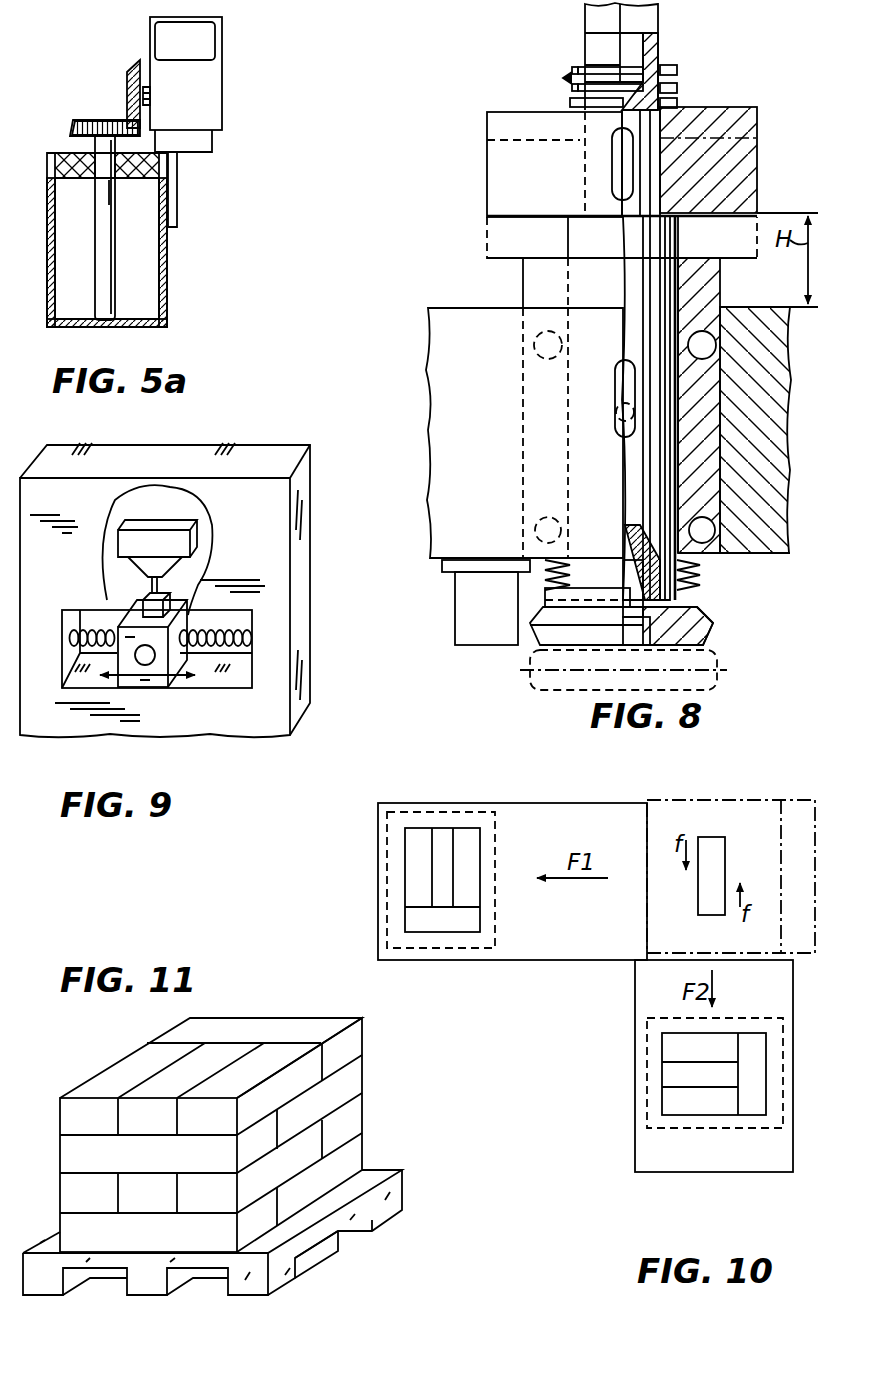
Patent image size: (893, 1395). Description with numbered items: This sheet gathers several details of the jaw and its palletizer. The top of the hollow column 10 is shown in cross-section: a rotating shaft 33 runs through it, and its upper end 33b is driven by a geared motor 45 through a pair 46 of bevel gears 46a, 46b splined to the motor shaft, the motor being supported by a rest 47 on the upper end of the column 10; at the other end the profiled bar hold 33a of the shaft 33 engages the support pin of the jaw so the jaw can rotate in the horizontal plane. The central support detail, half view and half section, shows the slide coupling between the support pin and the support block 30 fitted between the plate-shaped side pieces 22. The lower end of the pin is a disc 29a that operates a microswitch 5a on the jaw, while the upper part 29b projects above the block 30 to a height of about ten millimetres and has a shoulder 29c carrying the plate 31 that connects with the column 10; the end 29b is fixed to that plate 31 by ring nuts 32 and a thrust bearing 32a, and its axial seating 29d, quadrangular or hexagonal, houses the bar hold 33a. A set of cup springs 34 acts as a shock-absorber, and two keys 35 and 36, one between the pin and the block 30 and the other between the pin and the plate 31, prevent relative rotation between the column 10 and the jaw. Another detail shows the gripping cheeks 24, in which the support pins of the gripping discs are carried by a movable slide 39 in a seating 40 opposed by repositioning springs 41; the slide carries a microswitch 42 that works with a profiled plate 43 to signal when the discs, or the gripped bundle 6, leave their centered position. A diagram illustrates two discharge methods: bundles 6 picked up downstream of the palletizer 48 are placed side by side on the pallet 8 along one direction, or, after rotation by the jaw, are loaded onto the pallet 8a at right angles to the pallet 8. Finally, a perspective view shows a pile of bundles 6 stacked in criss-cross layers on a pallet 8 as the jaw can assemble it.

In FIG. 5a, the geared motor 45 is at (207, 103).
In FIG. 5a, the rest 47 is at (178, 177).
In FIG. 5a, the pair of bevel gears 46 is at (115, 117).
In FIG. 5a, the bevel gear 46a is at (90, 122).
In FIG. 5a, the bevel gear 46b is at (130, 83).
In FIG. 5a, the rotating shaft 33 is at (110, 245).
In FIG. 8, the rotating shaft 33 is at (648, 22).
In FIG. 8, the bar hold 33a is at (630, 50).
In FIG. 5a, the upper end of the through shaft 33b is at (117, 187).
In FIG. 5a, the column 10 is at (167, 302).
In FIG. 8, the ring nuts 32 is at (563, 79).
In FIG. 8, the thrust bearing 32a is at (678, 102).
In FIG. 8, the disc 29a is at (713, 630).
In FIG. 8, the upper part of the pin 29b is at (647, 262).
In FIG. 8, the depression shoulder 29c is at (685, 213).
In FIG. 8, the axial seating 29d is at (650, 72).
In FIG. 8, the plate 31 is at (495, 130).
In FIG. 8, the key 36 is at (612, 168).
In FIG. 8, the key 35 is at (612, 382).
In FIG. 8, the support block 30 is at (537, 293).
In FIG. 8, the side pieces 22 is at (775, 540).
In FIG. 8, the set of cup springs 34 is at (693, 570).
In FIG. 8, the microswitch 5a is at (531, 623).
In FIG. 9, the gripping cheeks 24 is at (295, 595).
In FIG. 9, the movable slide 39 is at (183, 655).
In FIG. 9, the seating 40 is at (225, 618).
In FIG. 9, the repositioning springs 41 is at (85, 630).
In FIG. 9, the microswitch 42 is at (158, 592).
In FIG. 9, the profiled plate 43 is at (195, 537).
In FIG. 10, the palletizer 48 is at (792, 838).
In FIG. 10, the pallet 8 is at (495, 925).
In FIG. 10, the pallet 8a is at (768, 1026).
In FIG. 10, the bundles 6 is at (423, 860).